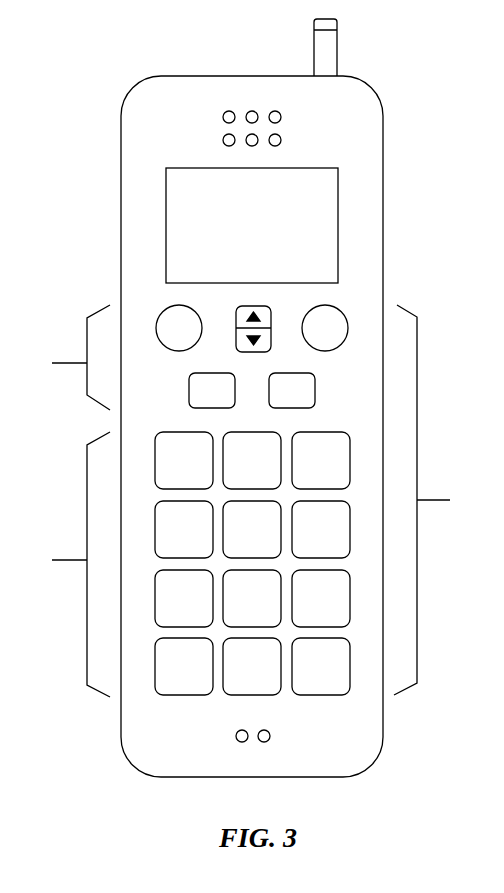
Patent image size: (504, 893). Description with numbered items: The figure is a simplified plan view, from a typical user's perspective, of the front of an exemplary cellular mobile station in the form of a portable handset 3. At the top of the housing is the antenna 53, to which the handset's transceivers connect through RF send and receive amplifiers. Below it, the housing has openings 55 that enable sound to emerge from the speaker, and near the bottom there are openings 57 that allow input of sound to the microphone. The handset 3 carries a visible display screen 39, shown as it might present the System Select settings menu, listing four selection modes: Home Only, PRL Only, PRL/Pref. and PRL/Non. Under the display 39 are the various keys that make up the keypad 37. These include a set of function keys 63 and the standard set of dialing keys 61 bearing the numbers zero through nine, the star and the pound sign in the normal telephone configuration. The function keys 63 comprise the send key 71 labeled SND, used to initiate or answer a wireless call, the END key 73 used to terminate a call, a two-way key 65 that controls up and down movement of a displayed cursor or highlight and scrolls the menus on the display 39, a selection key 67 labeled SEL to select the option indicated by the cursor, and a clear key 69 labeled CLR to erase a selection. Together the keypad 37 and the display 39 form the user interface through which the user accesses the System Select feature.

The handset 3 is at (111, 159).
The antenna 53 is at (350, 56).
The openings 55 is at (216, 100).
The display screen 39 is at (349, 183).
The function keys 63 is at (66, 357).
The clear key 69 is at (144, 309).
The two-way key 65 is at (286, 309).
The selection key 67 is at (360, 311).
The send key 71 is at (179, 382).
The END key 73 is at (324, 382).
The dialing keys 61 is at (186, 564).
The keypad 37 is at (436, 500).
The openings 57 is at (224, 750).